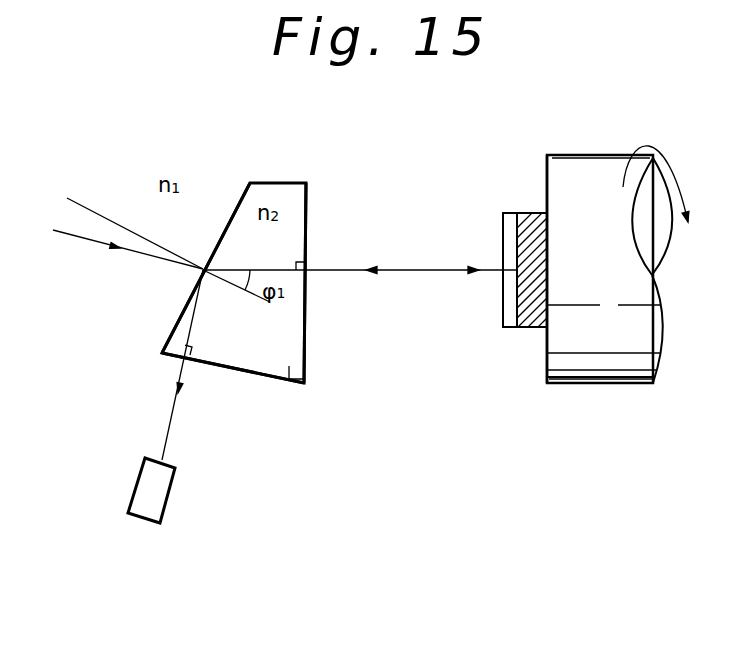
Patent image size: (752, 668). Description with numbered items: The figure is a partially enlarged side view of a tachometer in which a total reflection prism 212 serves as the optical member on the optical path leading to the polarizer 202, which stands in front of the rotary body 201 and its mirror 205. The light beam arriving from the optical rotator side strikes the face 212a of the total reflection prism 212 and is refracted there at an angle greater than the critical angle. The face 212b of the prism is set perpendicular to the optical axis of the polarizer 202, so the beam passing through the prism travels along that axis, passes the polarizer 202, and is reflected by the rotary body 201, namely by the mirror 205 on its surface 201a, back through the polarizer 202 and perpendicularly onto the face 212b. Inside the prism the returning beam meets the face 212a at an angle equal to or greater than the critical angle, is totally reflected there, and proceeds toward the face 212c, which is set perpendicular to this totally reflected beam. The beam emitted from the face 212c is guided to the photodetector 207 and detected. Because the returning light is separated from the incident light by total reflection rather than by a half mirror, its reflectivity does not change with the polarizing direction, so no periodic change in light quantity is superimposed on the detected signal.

The rotary body 201 is at (612, 367).
The drum outer surface 201a is at (547, 185).
The polarizer 202 is at (502, 320).
The mirror 205 is at (530, 333).
The photodetector 207 is at (158, 495).
The total reflection prism 212 is at (290, 384).
The face 212a is at (225, 230).
The face 212b is at (333, 208).
The face 212c is at (223, 371).